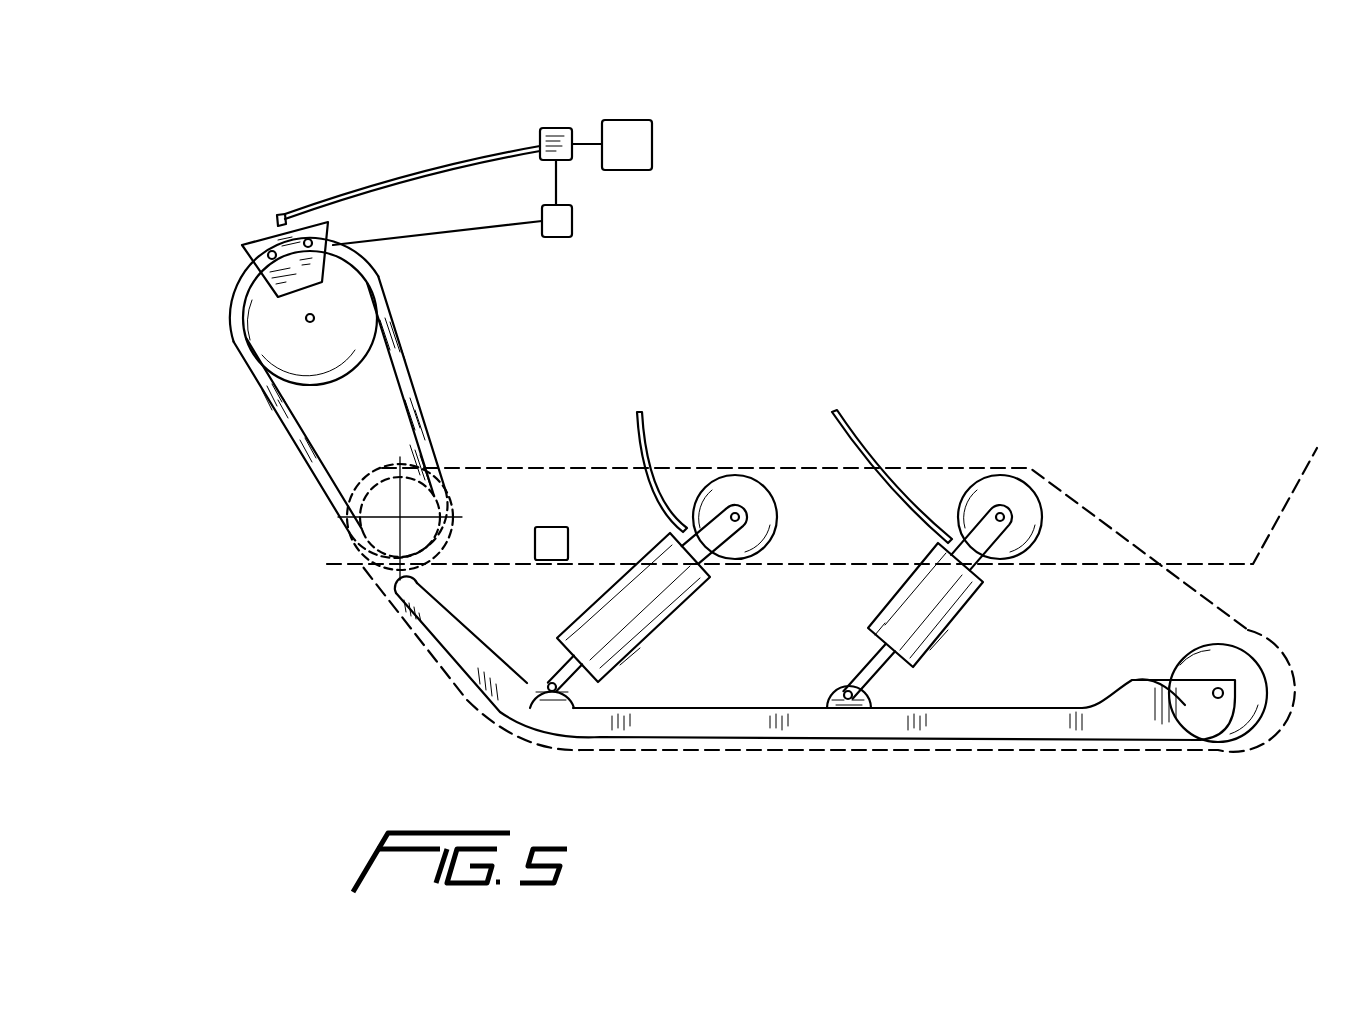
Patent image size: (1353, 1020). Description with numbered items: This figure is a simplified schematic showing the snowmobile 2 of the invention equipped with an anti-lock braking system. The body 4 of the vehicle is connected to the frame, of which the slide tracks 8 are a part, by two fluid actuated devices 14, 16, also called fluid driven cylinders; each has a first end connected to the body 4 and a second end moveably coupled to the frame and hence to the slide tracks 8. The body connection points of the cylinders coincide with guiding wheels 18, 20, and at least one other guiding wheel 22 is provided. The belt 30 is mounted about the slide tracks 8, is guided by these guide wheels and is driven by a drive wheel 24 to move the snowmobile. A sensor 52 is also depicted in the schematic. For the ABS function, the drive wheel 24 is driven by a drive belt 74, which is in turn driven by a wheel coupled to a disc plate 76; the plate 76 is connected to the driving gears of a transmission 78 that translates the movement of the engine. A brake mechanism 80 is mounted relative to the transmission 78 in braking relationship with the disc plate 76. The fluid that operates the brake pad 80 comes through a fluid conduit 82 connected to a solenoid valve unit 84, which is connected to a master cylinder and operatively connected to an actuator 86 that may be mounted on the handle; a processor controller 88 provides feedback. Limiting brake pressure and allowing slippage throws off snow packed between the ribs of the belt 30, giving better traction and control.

The vehicle apparatus 2 is at (1085, 245).
The body 4 is at (1203, 491).
The slide tracks 8 is at (673, 722).
The fluid actuated device 14 is at (650, 630).
The fluid actuated device 16 is at (957, 622).
The guiding wheel 18 is at (735, 476).
The guiding wheel 20 is at (1050, 497).
The guiding wheel 22 is at (1260, 730).
The drive wheel 24 is at (360, 563).
The belt 30 is at (955, 752).
The sensor 52 is at (548, 525).
The drive belt 74 is at (415, 385).
The disc plate 76 is at (238, 296).
The transmission 78 is at (282, 430).
The brake mechanism 80 is at (253, 240).
The fluid conduit 82 is at (425, 167).
The solenoid valve unit 84 is at (560, 128).
The actuator 86 is at (652, 143).
The processor controller 88 is at (572, 222).